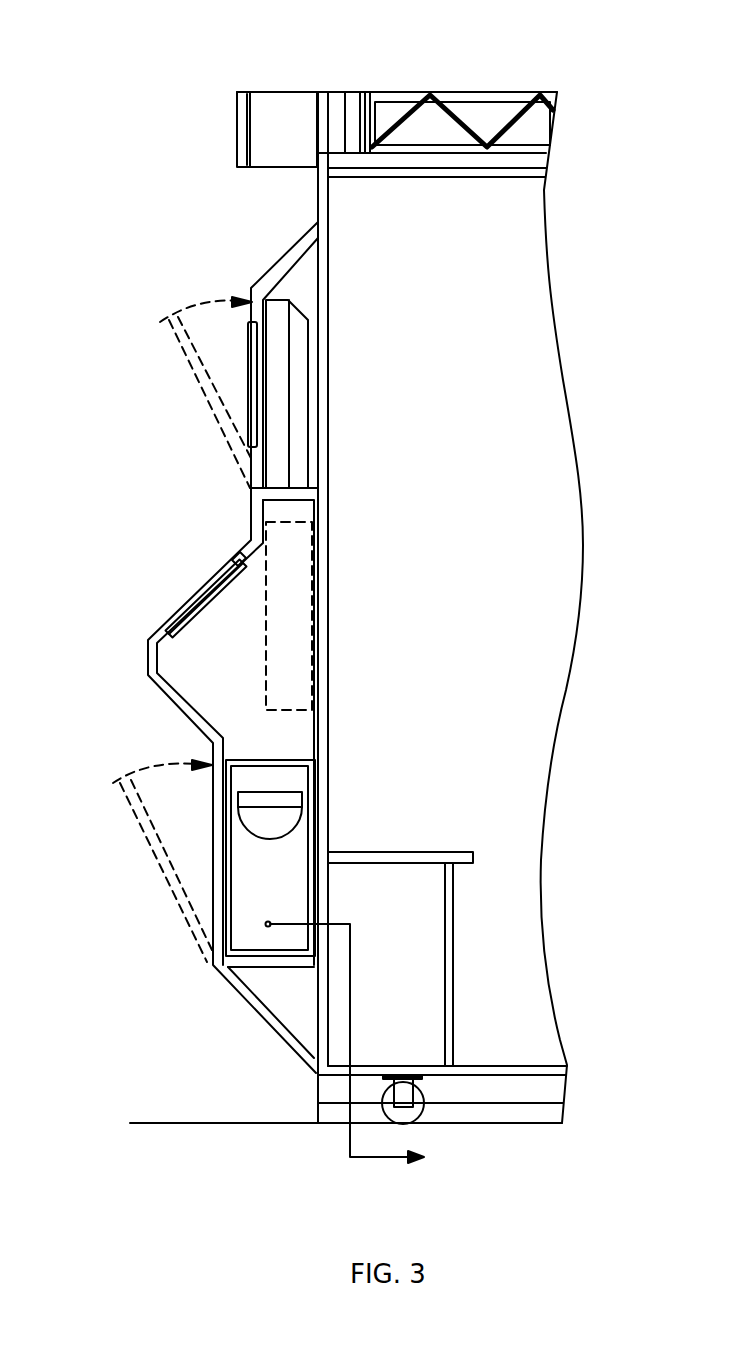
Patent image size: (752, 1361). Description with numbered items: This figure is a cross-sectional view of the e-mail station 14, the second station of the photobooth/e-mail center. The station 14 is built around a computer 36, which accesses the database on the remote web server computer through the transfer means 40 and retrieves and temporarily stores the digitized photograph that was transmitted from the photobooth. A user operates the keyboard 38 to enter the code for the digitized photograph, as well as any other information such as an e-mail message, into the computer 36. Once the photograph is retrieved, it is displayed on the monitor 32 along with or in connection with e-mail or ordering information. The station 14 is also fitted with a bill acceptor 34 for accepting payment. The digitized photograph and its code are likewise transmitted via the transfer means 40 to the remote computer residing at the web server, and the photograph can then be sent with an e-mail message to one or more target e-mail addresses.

The e-mail station 14 is at (592, 67).
The monitor 32 is at (302, 392).
The keyboard 38 is at (197, 593).
The bill acceptor 34 is at (282, 685).
The computer 36 is at (290, 910).
The transfer means 40 is at (350, 1153).